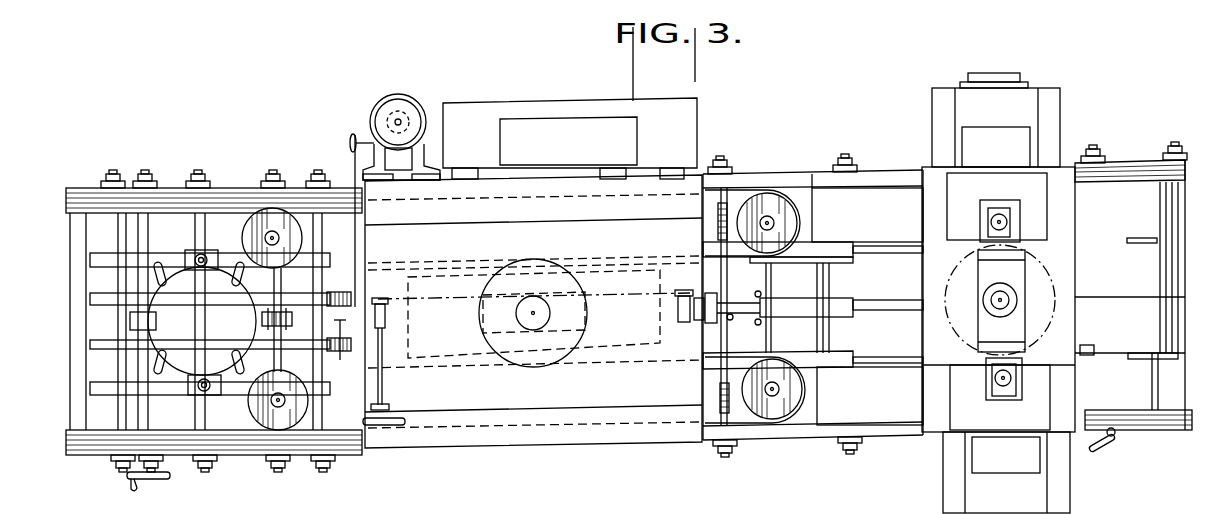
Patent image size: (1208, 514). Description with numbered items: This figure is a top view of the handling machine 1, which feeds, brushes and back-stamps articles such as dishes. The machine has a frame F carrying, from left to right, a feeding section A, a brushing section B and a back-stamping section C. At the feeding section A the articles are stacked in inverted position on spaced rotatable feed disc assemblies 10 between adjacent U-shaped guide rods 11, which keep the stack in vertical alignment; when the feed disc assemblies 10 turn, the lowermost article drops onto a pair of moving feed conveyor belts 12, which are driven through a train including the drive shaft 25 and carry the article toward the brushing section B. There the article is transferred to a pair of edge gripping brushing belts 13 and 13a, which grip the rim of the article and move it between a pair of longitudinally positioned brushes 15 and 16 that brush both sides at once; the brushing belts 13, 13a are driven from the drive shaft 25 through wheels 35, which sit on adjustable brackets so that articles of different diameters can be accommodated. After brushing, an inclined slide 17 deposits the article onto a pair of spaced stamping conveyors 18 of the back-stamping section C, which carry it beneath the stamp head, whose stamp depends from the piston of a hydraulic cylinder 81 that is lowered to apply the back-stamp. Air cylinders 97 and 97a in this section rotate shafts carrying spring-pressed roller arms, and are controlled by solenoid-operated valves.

The handling machine 1 is at (1084, 149).
The feed disc assemblies 10 is at (213, 251).
The U-shaped guide rods 11 is at (160, 265).
The feed conveyor belts 12 is at (193, 300).
The edge gripping brushing belt 13 is at (330, 265).
The edge gripping brushing belt 13a is at (753, 425).
The brush 15 is at (428, 273).
The brush 16 is at (652, 270).
The inclined slide 17 is at (823, 248).
The stamping conveyors 18 is at (1105, 250).
The drive shaft 25 is at (122, 410).
The wheels 35 is at (265, 221).
The hydraulic cylinder 81 is at (998, 302).
The air cylinder 97 is at (995, 383).
The air cylinder 97a is at (992, 208).
The feeding section A is at (269, 106).
The brushing section B is at (543, 90).
The back-stamping section C is at (948, 74).
The frame F is at (170, 200).